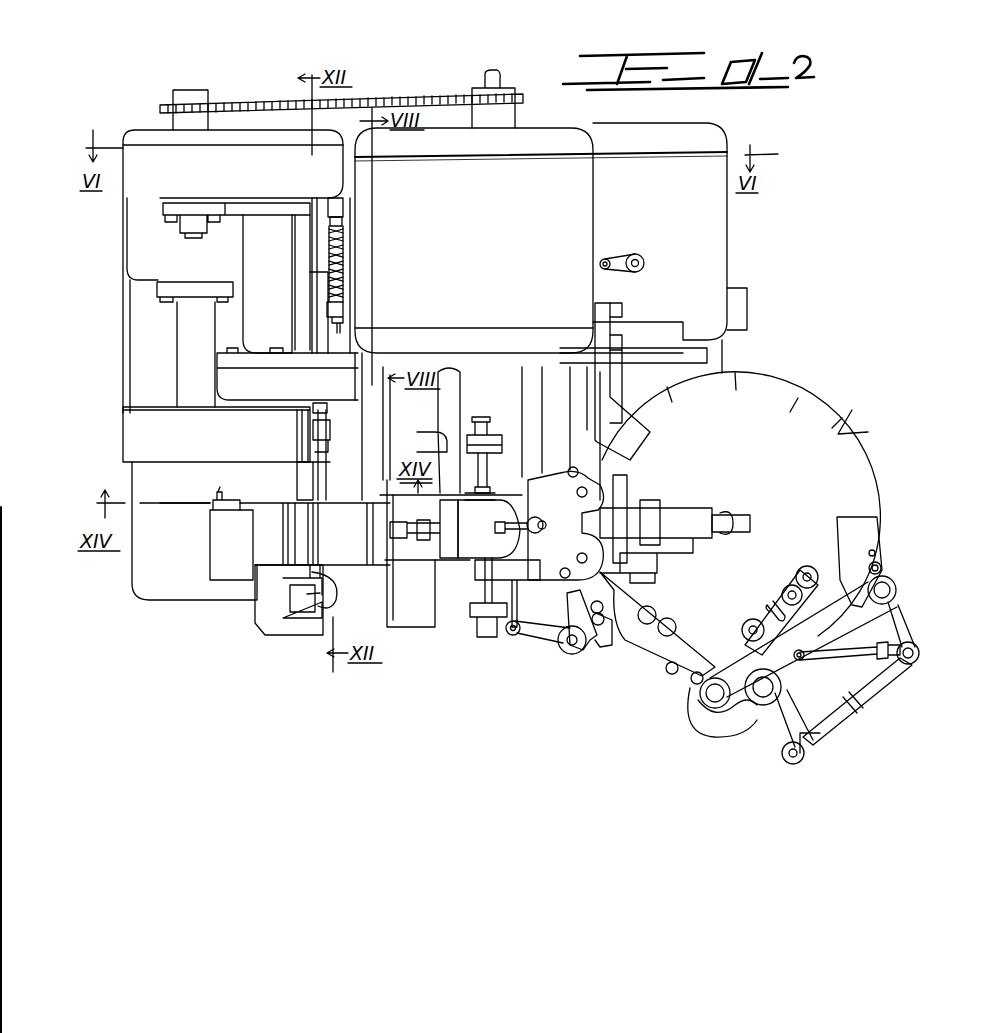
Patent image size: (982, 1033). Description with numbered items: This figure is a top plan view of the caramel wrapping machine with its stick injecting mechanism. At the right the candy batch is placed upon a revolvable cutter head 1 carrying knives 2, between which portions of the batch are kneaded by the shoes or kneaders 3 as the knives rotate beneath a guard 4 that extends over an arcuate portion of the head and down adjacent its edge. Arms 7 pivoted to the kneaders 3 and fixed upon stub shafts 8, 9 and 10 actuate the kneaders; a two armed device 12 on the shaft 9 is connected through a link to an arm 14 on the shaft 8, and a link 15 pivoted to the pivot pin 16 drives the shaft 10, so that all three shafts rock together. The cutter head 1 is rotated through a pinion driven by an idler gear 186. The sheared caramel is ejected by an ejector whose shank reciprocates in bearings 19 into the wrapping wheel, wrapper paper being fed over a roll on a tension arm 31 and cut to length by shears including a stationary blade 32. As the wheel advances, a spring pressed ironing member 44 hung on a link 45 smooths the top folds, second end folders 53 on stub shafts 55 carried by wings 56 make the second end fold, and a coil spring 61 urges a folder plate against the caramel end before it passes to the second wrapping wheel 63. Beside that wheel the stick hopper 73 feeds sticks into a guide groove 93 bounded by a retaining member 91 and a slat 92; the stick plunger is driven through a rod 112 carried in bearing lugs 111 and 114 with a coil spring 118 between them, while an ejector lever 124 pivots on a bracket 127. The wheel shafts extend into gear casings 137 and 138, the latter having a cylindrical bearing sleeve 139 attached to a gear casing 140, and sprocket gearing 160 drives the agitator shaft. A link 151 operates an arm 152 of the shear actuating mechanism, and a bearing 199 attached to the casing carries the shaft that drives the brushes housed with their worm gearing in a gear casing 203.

The revolvable cutter head 1 is at (760, 400).
The knives 2 is at (853, 414).
The kneaders 3 is at (633, 602).
The guard 4 is at (868, 535).
The arms 7 is at (840, 603).
The stub shaft 8 is at (893, 582).
The stub shaft 9 is at (765, 695).
The stub shaft 10 is at (710, 697).
The two armed device 12 is at (710, 723).
The arm 14 is at (910, 642).
The link 15 is at (853, 653).
The pivot pin 16 is at (913, 658).
The bearings 19 is at (690, 518).
The tension arm 31 is at (867, 687).
The stationary blade 32 is at (585, 660).
The ironing member 44 is at (475, 540).
The link 45 is at (520, 530).
The second end folders 53 is at (482, 497).
The stub shafts 55 is at (473, 430).
The wings 56 is at (476, 440).
The coil spring 61 is at (457, 595).
The second wrapping wheel 63 is at (278, 543).
The stick hopper 73 is at (216, 503).
The retaining member 91 is at (322, 492).
The slat 92 is at (296, 481).
The guide groove 93 is at (308, 470).
The bearing lug 111 is at (345, 312).
The rod 112 is at (343, 240).
The bearing lug 114 is at (345, 206).
The coil spring 118 is at (345, 268).
The ejector lever 124 is at (330, 598).
The bracket 127 is at (273, 617).
The gear casing 137 is at (551, 221).
The gear casing 138 is at (233, 382).
The cylindrical bearing sleeve 139 is at (262, 267).
The gear casing 140 is at (150, 184).
The link 151 is at (555, 611).
The arm 152 is at (550, 652).
The sprocket gearing 160 is at (272, 96).
The idler gear 186 is at (750, 500).
The bearing 199 is at (552, 400).
The gear casing 203 is at (600, 498).